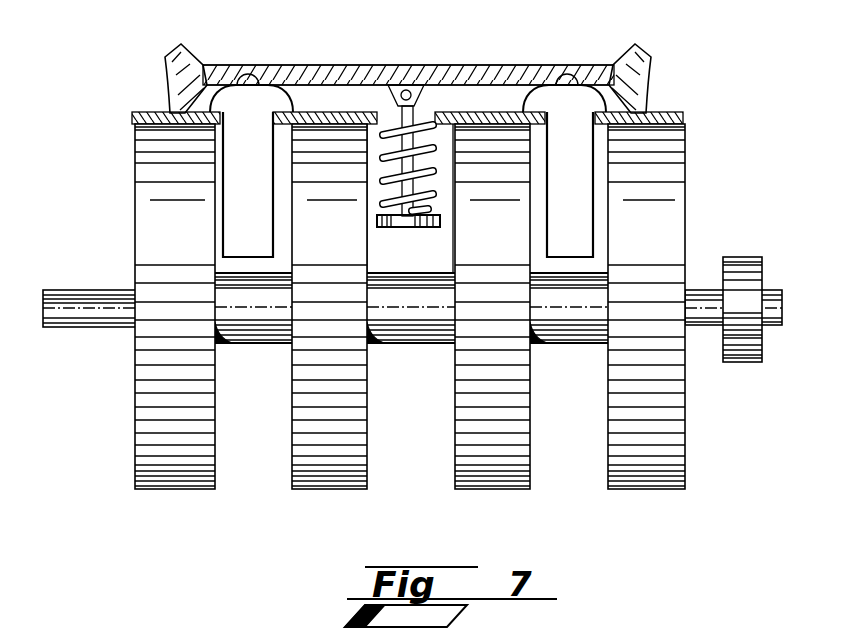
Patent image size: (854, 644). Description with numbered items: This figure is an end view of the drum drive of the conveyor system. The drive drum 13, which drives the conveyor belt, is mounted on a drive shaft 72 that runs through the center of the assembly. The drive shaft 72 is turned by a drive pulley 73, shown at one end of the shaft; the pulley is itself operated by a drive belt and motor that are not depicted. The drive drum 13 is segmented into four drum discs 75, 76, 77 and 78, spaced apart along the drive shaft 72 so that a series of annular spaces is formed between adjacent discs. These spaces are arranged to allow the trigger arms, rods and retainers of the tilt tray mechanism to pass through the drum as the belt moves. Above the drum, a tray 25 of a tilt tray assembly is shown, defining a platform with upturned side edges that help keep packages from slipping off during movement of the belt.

The drive drum 13 is at (702, 184).
The tray 25 is at (567, 55).
The drive shaft 72 is at (553, 345).
The drive pulley 73 is at (93, 320).
The drum disc 75 is at (136, 435).
The drum disc 76 is at (292, 430).
The drum disc 77 is at (456, 438).
The drum disc 78 is at (607, 453).